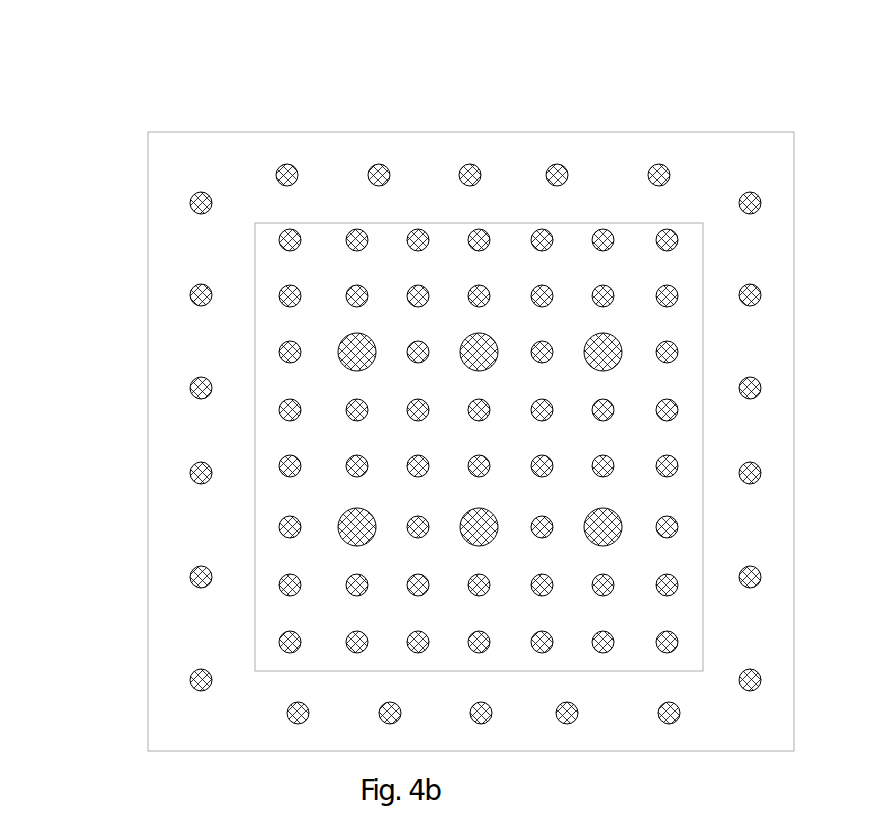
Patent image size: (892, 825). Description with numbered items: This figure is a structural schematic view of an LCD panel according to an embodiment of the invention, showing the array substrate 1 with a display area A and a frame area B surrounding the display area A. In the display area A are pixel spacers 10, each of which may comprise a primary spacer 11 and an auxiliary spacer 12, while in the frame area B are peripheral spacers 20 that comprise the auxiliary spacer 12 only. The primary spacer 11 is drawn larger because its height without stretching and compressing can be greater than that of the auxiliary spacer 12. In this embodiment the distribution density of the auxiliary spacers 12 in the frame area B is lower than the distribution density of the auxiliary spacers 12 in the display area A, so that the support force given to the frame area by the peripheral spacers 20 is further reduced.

The array substrate 1 is at (723, 132).
The pixel spacer 10 is at (68, 473).
The primary spacer 11 is at (338, 521).
The auxiliary spacer 12 is at (190, 204).
The peripheral spacer 20 is at (80, 195).
The display area A is at (583, 253).
The frame area B is at (430, 178).